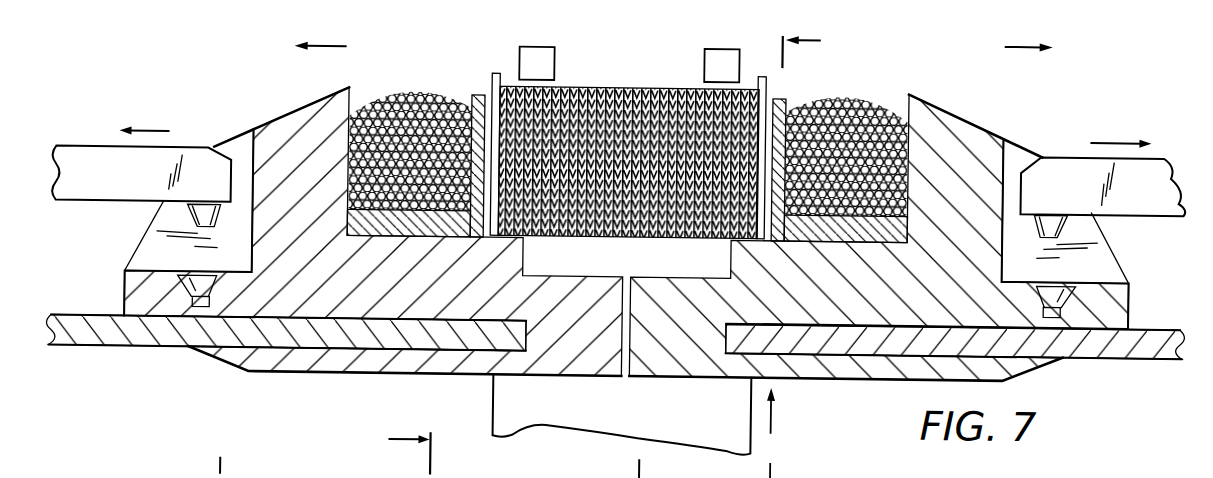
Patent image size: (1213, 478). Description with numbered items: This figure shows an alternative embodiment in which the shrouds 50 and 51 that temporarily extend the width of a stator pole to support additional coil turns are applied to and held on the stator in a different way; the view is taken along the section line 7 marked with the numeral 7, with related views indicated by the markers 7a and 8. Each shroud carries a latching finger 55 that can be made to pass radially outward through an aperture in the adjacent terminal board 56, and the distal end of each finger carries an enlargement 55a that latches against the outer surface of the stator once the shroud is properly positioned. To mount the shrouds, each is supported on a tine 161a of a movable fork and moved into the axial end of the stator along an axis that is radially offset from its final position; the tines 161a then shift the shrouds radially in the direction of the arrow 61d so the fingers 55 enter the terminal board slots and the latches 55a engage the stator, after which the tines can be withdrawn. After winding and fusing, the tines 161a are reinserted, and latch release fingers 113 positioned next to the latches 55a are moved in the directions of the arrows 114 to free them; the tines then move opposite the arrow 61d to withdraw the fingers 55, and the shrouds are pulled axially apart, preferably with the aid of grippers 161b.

The shroud 50 is at (953, 111).
The shroud 51 is at (302, 117).
The latching finger 55 is at (852, 112).
The enlargement 55a is at (737, 80).
The terminal board 56 is at (776, 96).
The arrow 61d is at (778, 415).
The latch release finger 113 is at (517, 50).
The arrow 114 is at (326, 54).
The tine 161a is at (75, 353).
The gripper 161b is at (88, 153).
The section line for FIG. 8 is at (811, 52).
The section line for FIG. 7 is at (397, 453).
The section line for FIG. 7a is at (429, 463).